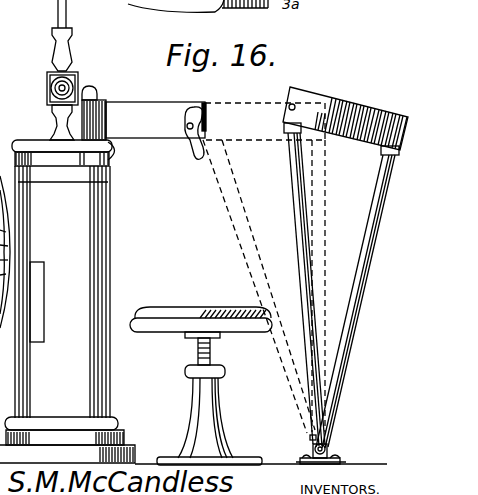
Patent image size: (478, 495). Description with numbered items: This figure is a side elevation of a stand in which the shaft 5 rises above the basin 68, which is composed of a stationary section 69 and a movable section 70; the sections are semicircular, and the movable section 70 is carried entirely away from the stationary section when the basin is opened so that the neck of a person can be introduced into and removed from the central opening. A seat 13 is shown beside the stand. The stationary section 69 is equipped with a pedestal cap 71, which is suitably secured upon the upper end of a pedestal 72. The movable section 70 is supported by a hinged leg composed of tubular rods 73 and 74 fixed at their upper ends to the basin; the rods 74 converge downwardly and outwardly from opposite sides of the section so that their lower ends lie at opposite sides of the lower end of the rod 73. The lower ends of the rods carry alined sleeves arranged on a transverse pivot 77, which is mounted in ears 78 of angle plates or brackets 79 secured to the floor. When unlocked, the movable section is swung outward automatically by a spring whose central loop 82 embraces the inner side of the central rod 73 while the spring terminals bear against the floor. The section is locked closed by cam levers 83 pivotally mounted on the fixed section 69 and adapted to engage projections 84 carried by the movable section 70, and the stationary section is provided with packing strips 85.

The shaft 5 is at (67, 13).
The seat 13 is at (168, 312).
The basin 68 is at (155, 108).
The stationary section 69 is at (117, 123).
The movable section 70 is at (371, 109).
The pedestal cap 71 is at (31, 142).
The pedestal 72 is at (67, 314).
The tubular rod 73 is at (323, 313).
The tubular rods 74 is at (303, 238).
The transverse pivot 77 is at (326, 452).
The ears 78 is at (308, 461).
The angle plates or brackets 79 is at (342, 467).
The central loop 82 is at (309, 438).
The cam levers 83 is at (186, 148).
The projections 84 is at (296, 104).
The packing strips 85 is at (208, 120).